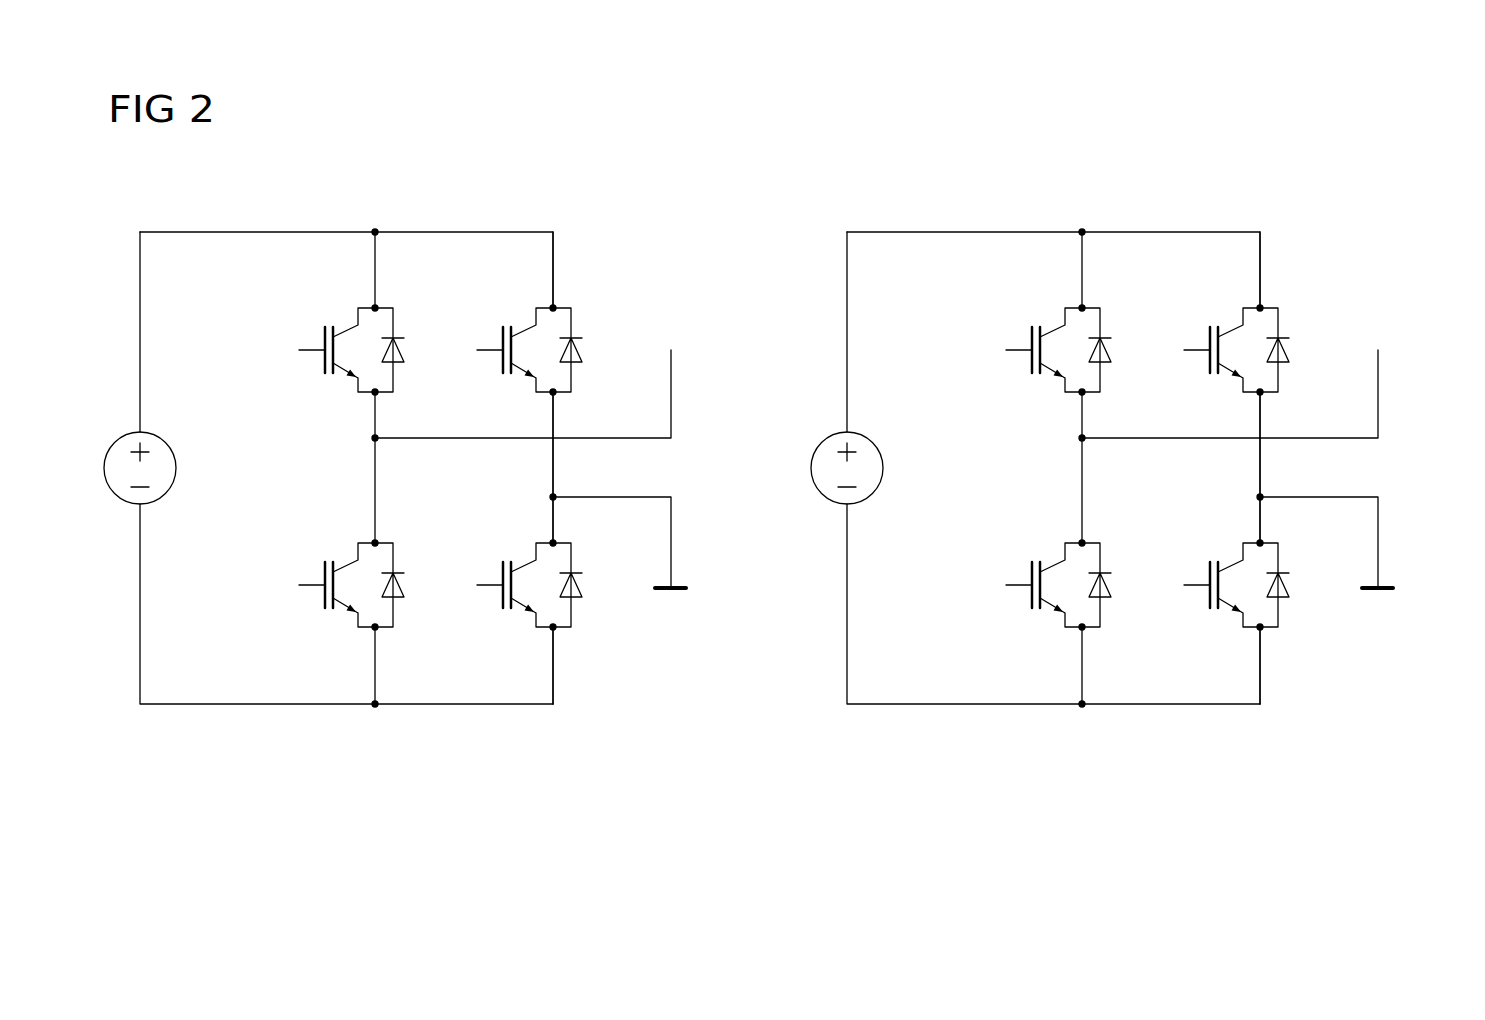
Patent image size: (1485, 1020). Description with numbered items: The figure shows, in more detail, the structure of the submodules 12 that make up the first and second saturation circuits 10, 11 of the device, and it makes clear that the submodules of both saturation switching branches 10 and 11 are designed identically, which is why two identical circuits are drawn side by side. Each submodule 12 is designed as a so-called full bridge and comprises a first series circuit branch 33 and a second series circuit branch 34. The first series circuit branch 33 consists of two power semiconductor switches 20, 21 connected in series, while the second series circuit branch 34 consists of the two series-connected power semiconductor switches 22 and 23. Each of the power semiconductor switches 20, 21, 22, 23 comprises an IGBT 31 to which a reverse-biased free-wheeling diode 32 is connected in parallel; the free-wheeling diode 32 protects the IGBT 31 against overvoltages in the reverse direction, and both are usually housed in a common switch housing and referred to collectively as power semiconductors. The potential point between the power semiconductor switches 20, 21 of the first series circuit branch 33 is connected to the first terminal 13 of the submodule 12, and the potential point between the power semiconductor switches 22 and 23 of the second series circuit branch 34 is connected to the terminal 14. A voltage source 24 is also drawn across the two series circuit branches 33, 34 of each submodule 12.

The first saturation circuit 10 is at (688, 222).
The second saturation circuit 11 is at (1150, 400).
The submodule 12 is at (125, 725).
The first terminal 13 is at (671, 397).
The terminal 14 is at (671, 547).
The power semiconductor switch 20 is at (343, 308).
The power semiconductor switch 21 is at (345, 620).
The power semiconductor switch 22 is at (520, 308).
The power semiconductor switch 23 is at (523, 620).
The DC voltage source 24 is at (176, 468).
The IGBT 31 is at (323, 370).
The free-wheeling diode 32 is at (405, 355).
The first series circuit branch 33 is at (363, 268).
The second series circuit branch 34 is at (563, 268).